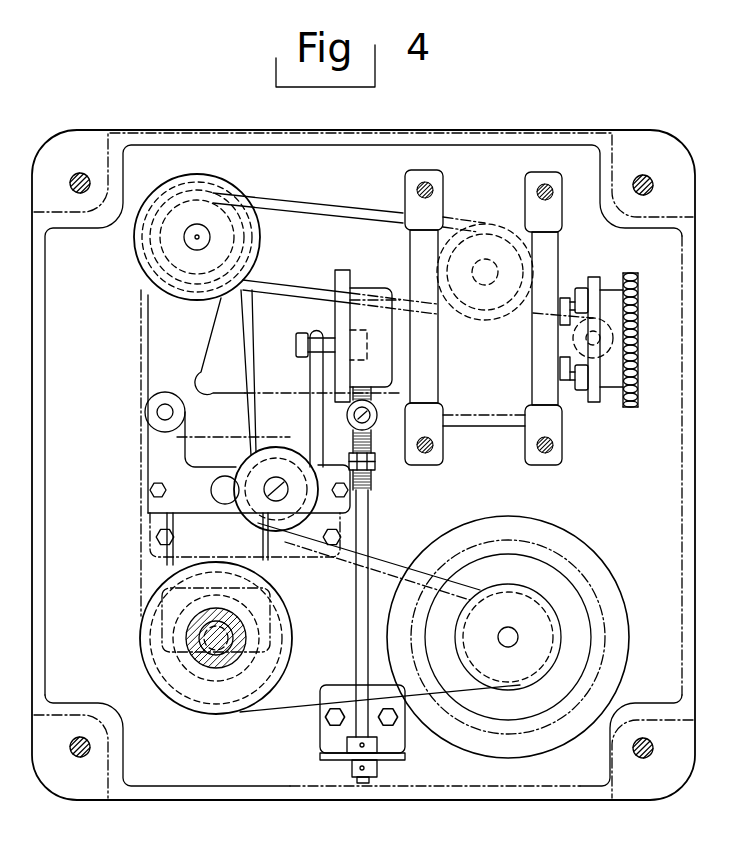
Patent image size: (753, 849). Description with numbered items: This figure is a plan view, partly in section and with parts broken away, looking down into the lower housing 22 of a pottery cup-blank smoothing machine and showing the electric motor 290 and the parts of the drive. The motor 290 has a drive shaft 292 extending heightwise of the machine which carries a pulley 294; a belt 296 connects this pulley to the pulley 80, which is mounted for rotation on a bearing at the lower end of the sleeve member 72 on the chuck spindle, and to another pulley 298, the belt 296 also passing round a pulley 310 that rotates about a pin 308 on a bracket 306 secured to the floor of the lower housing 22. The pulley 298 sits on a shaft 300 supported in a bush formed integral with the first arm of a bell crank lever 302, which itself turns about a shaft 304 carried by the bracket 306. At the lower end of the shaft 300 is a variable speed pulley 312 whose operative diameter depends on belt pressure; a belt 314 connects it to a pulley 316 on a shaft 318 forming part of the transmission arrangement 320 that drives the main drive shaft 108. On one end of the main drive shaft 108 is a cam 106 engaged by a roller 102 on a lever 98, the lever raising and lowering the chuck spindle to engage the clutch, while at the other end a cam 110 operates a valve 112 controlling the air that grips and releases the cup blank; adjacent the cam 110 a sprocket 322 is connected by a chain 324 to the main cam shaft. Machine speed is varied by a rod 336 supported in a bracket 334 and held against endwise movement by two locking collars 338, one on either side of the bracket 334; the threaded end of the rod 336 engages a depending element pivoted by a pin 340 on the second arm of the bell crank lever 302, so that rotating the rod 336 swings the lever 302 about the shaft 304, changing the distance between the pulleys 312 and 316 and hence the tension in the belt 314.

The lower housing 22 is at (40, 386).
The sleeve member 72 is at (220, 674).
The pulley 80 is at (156, 622).
The lever 98 is at (319, 449).
The roller 102 is at (349, 362).
The cam 106 is at (342, 272).
The main drive shaft 108 is at (395, 327).
The cam 110 is at (596, 410).
The valve 112 is at (599, 330).
The electric motor 290 is at (597, 559).
The drive shaft 292 is at (514, 642).
The pulley 294 is at (518, 618).
The belt 296 is at (140, 352).
The pulley 298 is at (137, 249).
The shaft 300 is at (210, 244).
The bell crank lever 302 is at (200, 343).
The shaft 304 is at (154, 412).
The bracket 306 is at (203, 496).
The pin 308 is at (276, 489).
The pulley 310 is at (275, 497).
The pulley 312 is at (222, 232).
The belt 314 is at (352, 208).
The pulley 316 is at (485, 280).
The shaft 318 is at (490, 268).
The transmission arrangement 320 is at (502, 211).
The sprocket 322 is at (639, 344).
The chain 324 is at (639, 359).
The bracket 334 is at (321, 738).
The rod 336 is at (369, 532).
The locking collars 338 is at (372, 744).
The pin 340 is at (369, 412).